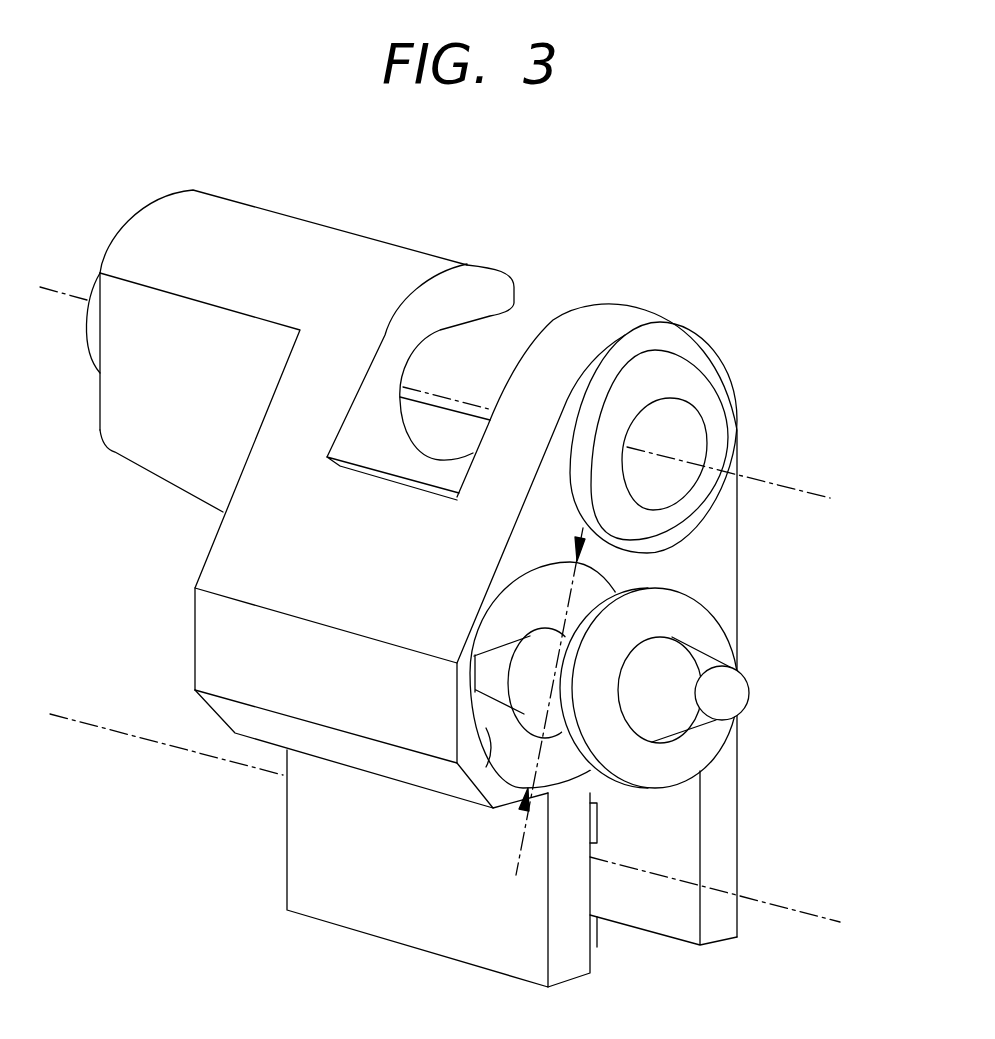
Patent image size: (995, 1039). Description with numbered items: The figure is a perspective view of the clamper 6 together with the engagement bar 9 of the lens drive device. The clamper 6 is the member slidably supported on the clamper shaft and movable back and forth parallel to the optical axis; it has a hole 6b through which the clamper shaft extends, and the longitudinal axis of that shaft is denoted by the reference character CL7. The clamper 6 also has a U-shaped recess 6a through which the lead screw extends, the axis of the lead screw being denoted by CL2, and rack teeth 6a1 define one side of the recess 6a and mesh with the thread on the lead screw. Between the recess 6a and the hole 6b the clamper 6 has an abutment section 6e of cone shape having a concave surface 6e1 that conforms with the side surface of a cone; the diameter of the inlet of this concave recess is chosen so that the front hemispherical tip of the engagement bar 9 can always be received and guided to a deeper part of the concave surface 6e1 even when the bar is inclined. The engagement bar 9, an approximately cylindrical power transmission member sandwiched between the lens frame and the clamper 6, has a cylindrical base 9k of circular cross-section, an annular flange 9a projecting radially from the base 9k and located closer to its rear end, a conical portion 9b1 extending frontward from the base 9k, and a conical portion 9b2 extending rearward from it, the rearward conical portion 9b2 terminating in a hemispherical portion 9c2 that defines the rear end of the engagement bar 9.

The clamper 6 is at (317, 227).
The U-shaped recess 6a is at (662, 913).
The rack teeth 6a1 is at (596, 936).
The hole 6b is at (688, 424).
The abutment section 6e is at (508, 748).
The concave surface 6e1 is at (518, 700).
The engagement bar 9 is at (533, 653).
The annular flange 9a is at (717, 621).
The conical portion 9b1 is at (492, 672).
The conical portion 9b2 is at (690, 663).
The hemispherical portion 9c2 is at (736, 693).
The cylindrical base 9k is at (528, 693).
The longitudinal axis of the clamper shaft CL7 is at (812, 490).
The axis of the lead screw CL2 is at (803, 907).